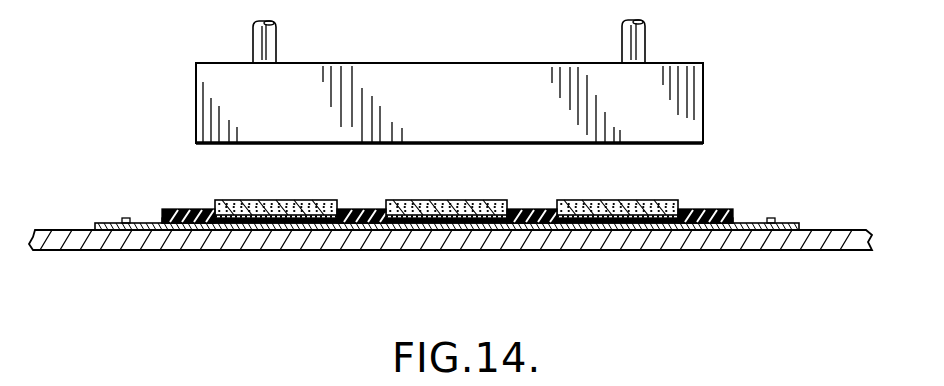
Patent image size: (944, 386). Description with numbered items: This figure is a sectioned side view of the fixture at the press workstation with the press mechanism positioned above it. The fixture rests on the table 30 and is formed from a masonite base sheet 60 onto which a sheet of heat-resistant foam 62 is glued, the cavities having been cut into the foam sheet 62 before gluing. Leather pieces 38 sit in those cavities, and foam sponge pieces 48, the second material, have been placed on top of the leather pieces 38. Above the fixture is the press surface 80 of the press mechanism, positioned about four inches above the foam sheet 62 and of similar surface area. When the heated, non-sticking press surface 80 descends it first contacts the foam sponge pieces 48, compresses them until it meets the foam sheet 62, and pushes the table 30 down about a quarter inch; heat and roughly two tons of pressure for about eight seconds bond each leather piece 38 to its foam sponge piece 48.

The press surface 80 is at (686, 143).
The table 30 is at (412, 251).
The leather piece 38 is at (268, 226).
The heat-resistant foam sheet 62 is at (185, 210).
The foam sponge piece 48 is at (316, 200).
The masonite base sheet 60 is at (99, 223).